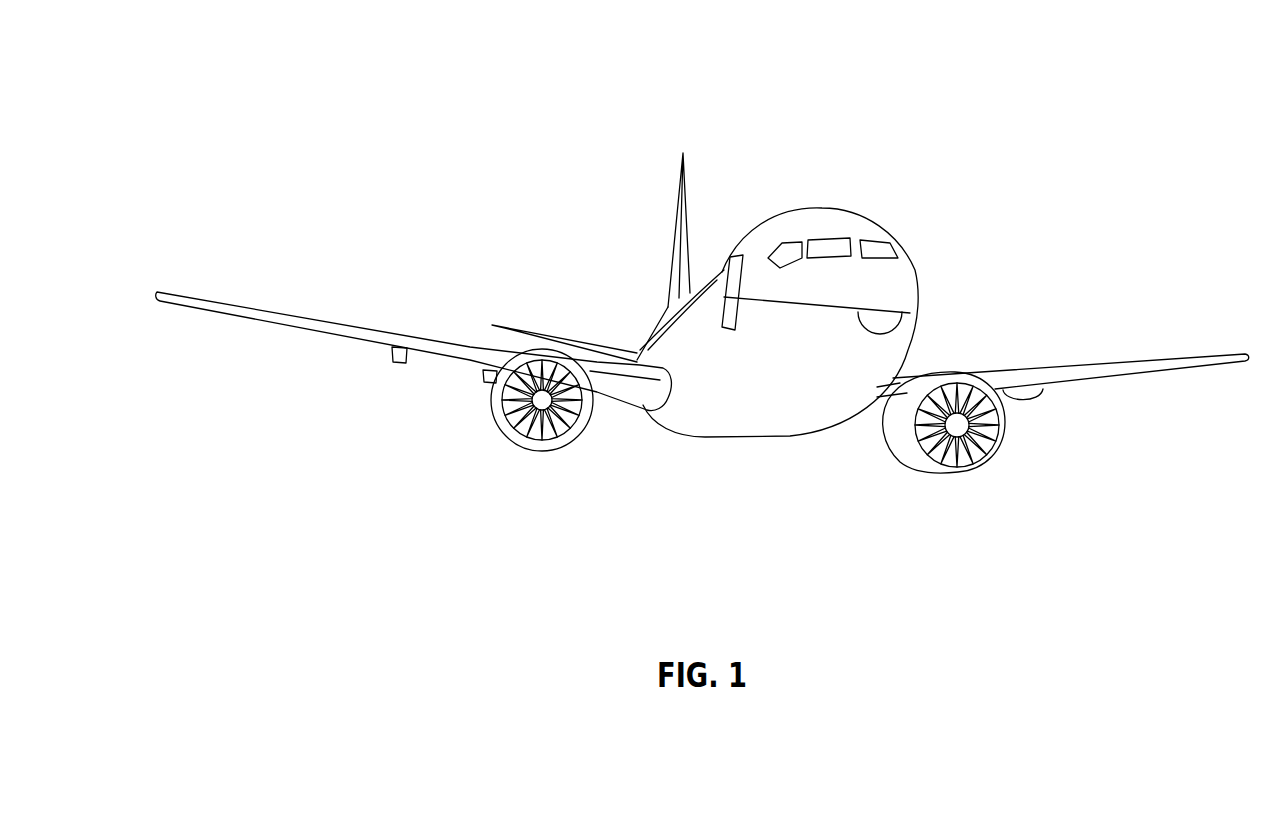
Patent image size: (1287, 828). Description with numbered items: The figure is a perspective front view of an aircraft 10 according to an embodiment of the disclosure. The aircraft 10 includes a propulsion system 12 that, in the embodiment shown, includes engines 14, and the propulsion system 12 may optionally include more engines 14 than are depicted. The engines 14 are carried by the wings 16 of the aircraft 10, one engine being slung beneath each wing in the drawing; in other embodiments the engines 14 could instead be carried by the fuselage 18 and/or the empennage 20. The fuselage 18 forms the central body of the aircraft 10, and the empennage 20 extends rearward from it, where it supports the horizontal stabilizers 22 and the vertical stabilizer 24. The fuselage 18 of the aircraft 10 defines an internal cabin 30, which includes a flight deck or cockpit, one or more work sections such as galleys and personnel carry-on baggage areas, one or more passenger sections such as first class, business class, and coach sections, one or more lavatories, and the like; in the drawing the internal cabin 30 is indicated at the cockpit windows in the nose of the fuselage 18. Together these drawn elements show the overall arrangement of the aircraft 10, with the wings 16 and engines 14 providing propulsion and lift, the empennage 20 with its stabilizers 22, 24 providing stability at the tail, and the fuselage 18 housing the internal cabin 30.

The aircraft 10 is at (432, 101).
The propulsion system 12 is at (443, 431).
The engines 14 is at (535, 452).
The wings 16 is at (303, 320).
The fuselage 18 is at (915, 276).
The empennage 20 is at (668, 307).
The horizontal stabilizers 22 is at (530, 327).
The vertical stabilizer 24 is at (678, 197).
The internal cabin 30 is at (833, 243).